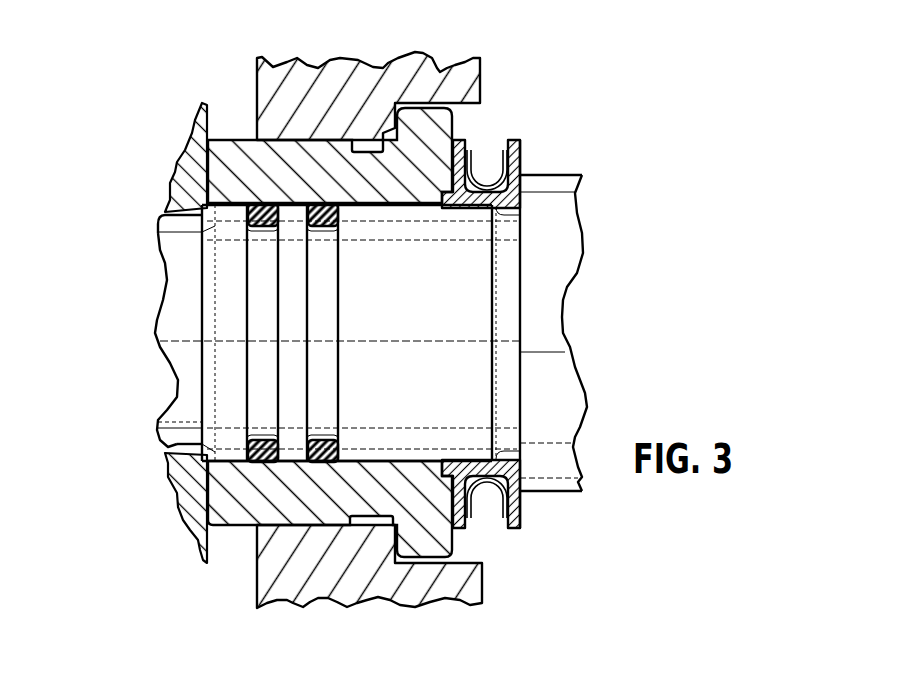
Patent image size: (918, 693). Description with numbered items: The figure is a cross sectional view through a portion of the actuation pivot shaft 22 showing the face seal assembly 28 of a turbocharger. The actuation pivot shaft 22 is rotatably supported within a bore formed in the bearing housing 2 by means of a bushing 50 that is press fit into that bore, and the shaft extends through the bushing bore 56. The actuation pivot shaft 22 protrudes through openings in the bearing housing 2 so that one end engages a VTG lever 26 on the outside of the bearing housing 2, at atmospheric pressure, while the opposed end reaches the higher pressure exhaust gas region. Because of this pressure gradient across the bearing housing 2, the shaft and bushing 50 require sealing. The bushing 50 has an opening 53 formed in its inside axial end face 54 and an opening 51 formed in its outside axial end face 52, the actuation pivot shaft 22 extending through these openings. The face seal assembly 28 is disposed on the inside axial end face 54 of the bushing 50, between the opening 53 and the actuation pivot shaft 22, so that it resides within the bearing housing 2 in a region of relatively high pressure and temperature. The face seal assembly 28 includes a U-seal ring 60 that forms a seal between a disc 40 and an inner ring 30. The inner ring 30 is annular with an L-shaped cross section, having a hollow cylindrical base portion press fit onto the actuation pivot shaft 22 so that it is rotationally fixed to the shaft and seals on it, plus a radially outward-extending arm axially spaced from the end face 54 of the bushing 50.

The bearing housing 2 is at (333, 75).
The actuation pivot shaft 22 is at (426, 327).
The VTG lever 26 is at (188, 173).
The face seal assembly 28 is at (538, 62).
The inner ring 30 is at (512, 140).
The disc 40 is at (452, 168).
The bushing 50 is at (257, 512).
The opening 51 is at (210, 463).
The outside axial end face 52 is at (200, 493).
The opening 53 is at (438, 460).
The inside axial end face 54 is at (453, 537).
The bushing bore 56 is at (390, 458).
The U-seal ring 60 is at (500, 152).